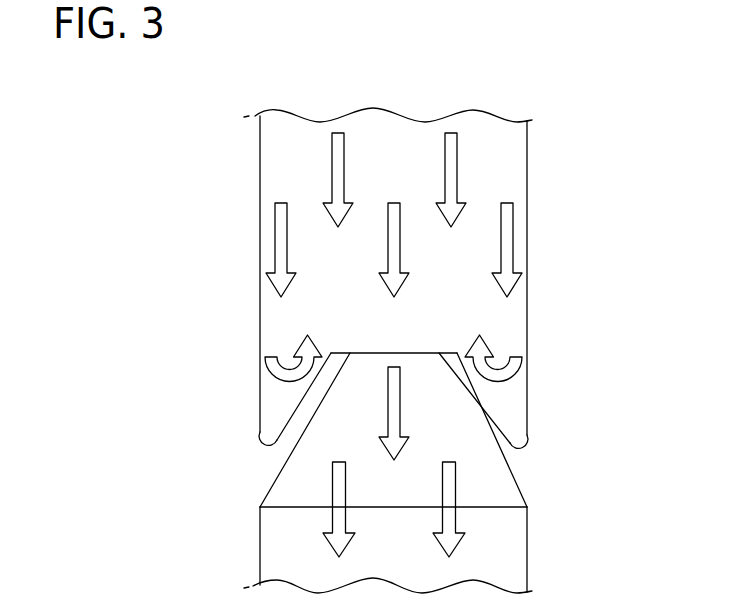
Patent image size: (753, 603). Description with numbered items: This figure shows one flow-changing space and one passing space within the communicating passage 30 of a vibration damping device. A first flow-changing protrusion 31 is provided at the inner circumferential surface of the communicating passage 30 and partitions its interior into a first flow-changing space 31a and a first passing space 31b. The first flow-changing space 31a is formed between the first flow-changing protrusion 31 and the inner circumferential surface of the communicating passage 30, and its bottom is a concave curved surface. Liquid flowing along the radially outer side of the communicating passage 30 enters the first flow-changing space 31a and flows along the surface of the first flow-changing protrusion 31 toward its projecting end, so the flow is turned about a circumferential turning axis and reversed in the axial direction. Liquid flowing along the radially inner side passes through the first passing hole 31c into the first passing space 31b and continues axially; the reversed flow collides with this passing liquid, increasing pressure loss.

The communicating passage 30 is at (534, 183).
The first flow-changing protrusion 31 is at (363, 398).
The first flow-changing space 31a is at (268, 401).
The first passing space 31b is at (305, 477).
The first passing hole 31c is at (349, 357).